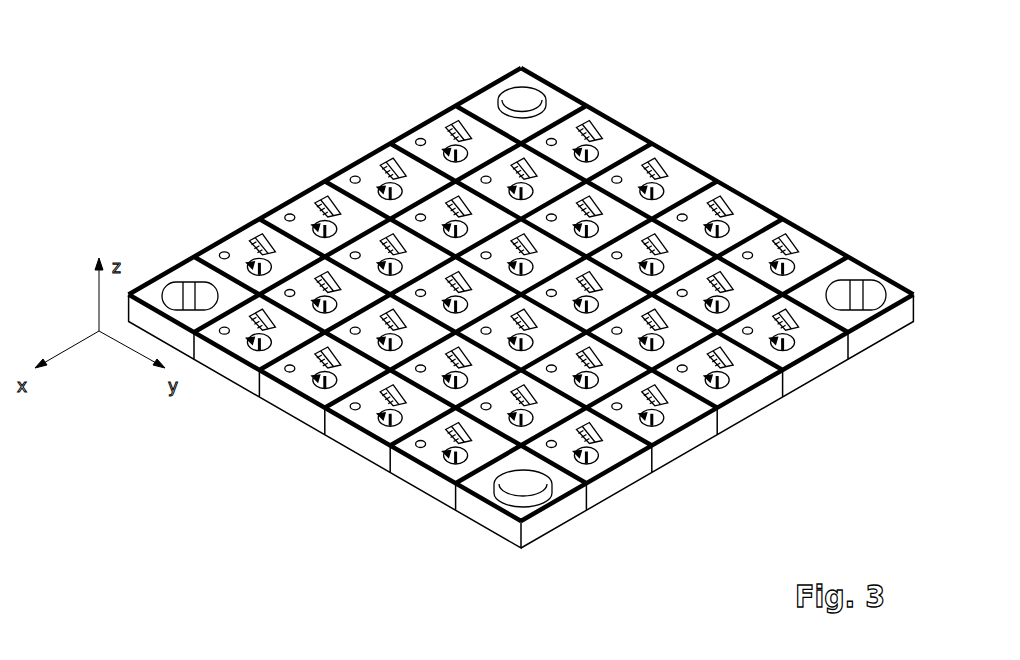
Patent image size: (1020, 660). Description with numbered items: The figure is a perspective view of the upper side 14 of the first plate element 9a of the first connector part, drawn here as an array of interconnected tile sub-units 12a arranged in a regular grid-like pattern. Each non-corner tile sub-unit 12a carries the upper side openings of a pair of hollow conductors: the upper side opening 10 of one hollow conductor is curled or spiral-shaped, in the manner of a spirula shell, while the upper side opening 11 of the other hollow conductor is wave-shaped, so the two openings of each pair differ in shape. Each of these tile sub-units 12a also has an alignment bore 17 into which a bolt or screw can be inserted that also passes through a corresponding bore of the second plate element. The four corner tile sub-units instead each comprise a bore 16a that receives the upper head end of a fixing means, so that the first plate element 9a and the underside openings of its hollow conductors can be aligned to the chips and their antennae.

The first plate element 9a is at (532, 312).
The upper side opening of the second hollow conductor 10 is at (663, 190).
The upper side opening of the first hollow conductor 11 is at (728, 203).
The tile sub-unit 12a is at (747, 401).
The upper side 14 is at (617, 449).
The bore 16a is at (532, 490).
The alignment bore 17 is at (753, 252).